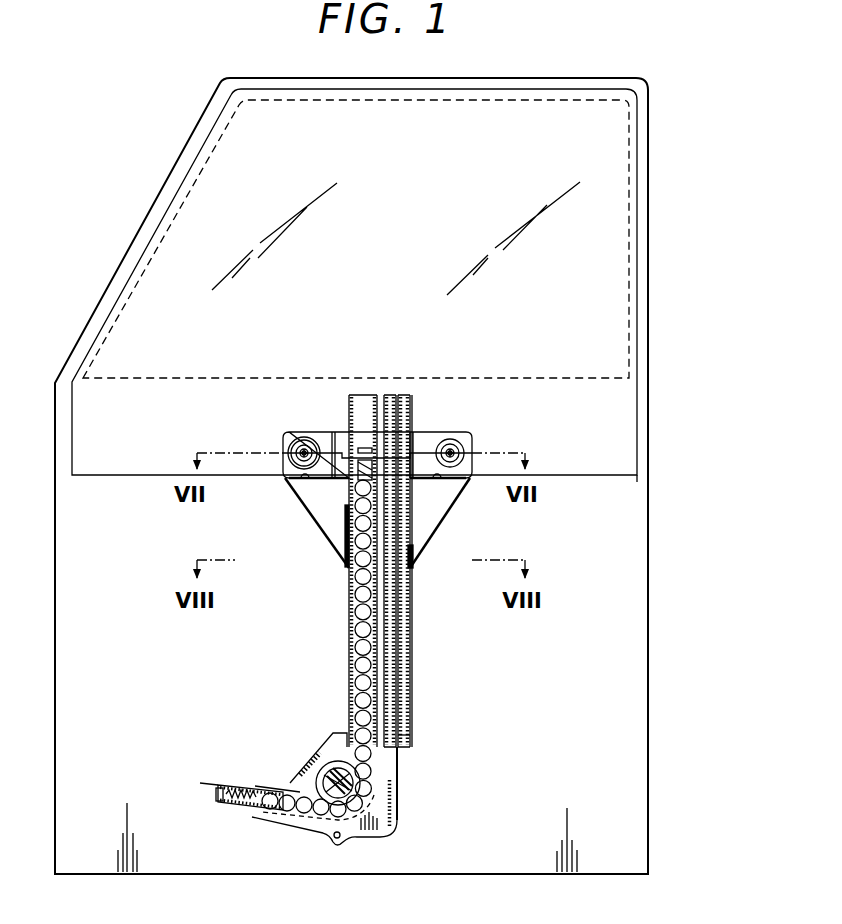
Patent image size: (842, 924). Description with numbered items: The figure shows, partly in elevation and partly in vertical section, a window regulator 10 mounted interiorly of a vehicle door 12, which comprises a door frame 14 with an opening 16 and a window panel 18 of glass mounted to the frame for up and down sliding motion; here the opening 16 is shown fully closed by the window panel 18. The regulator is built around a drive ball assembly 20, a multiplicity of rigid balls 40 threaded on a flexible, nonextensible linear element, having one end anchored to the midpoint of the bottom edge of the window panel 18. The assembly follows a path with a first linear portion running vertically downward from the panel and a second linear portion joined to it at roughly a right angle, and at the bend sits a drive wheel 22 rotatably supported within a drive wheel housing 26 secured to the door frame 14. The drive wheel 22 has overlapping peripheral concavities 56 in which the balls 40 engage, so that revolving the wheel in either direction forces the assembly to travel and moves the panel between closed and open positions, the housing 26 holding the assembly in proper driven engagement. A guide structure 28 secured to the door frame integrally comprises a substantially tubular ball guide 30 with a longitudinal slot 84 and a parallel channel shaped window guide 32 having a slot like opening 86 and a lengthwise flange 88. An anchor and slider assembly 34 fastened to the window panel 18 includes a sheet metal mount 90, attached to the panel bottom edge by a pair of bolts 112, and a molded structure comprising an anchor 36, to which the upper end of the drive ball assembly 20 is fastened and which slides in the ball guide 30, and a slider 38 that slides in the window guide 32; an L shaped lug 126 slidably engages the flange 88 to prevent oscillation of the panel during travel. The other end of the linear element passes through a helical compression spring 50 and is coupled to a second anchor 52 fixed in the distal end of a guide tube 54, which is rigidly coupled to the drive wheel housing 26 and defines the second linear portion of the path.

The window regulator 10 is at (199, 783).
The vehicle door 12 is at (658, 101).
The door frame 14 is at (640, 577).
The opening 16 is at (299, 105).
The window panel 18 is at (610, 206).
The drive ball assembly 20 is at (315, 648).
The drive wheel 22 is at (321, 753).
The drive wheel housing 26 is at (405, 762).
The guide structure 28 is at (380, 391).
The ball guide 30 is at (353, 406).
The window guide 32 is at (408, 407).
The anchor and slider assembly 34 is at (297, 429).
The anchor 36 is at (357, 478).
The slider 38 is at (404, 600).
The balls 40 is at (352, 609).
The helical compression spring 50 is at (240, 792).
The anchor 52 is at (222, 786).
The guide tube 54 is at (226, 808).
The concavities 56 is at (336, 757).
The slot 84 is at (370, 402).
The slot like opening 86 is at (412, 428).
The flange 88 is at (411, 418).
The mount 90 is at (466, 437).
The bolts 112 is at (288, 437).
The L shaped lug 126 is at (415, 566).